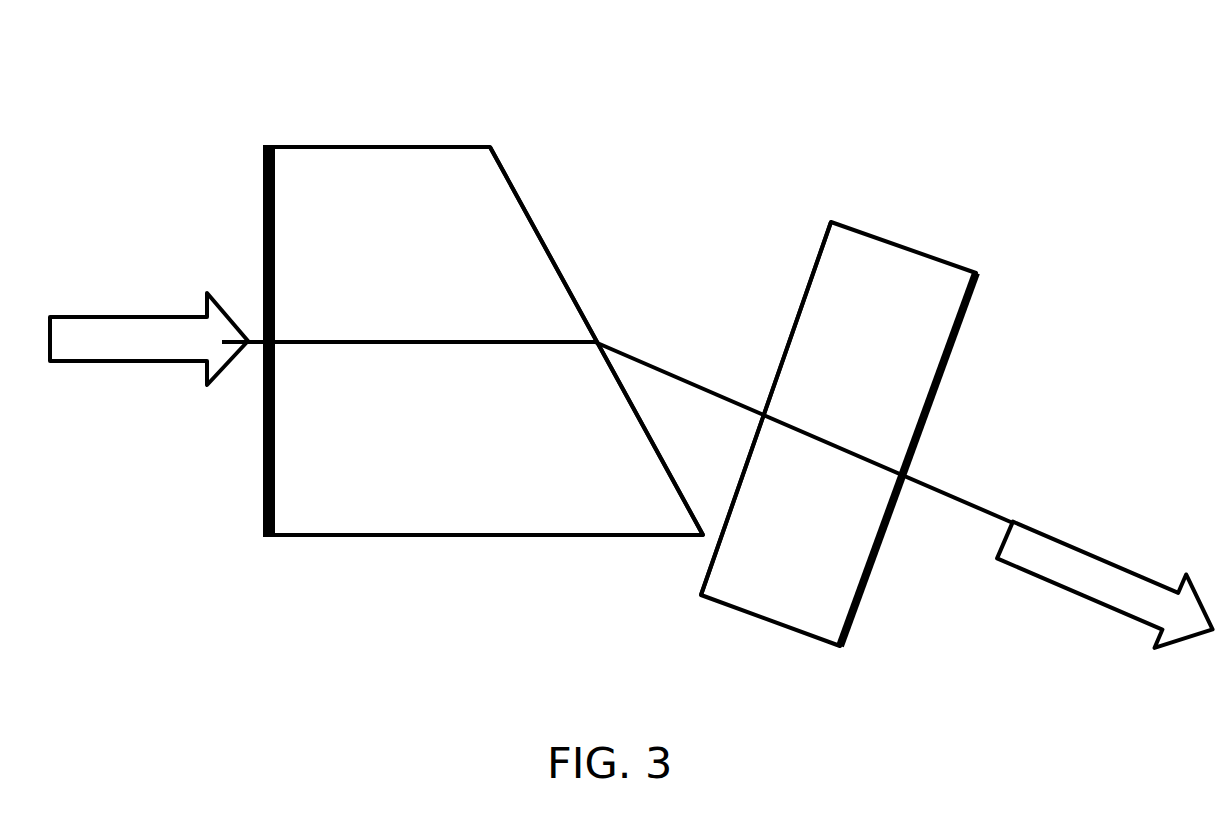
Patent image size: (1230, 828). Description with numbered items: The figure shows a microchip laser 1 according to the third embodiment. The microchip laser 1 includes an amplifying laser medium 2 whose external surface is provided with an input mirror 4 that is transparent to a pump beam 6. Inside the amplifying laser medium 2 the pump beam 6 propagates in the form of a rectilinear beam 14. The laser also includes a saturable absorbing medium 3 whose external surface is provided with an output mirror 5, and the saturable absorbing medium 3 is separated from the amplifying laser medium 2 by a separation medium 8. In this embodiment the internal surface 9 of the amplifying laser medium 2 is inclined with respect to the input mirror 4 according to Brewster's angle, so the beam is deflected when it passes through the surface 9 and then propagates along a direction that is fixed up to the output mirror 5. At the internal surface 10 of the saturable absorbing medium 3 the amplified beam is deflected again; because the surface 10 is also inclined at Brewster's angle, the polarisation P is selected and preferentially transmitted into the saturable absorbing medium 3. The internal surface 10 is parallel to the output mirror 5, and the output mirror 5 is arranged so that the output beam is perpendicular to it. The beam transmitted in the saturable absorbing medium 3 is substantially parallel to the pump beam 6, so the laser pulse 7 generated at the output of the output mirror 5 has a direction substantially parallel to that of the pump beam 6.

The microchip laser 1 is at (170, 666).
The amplifying laser medium 2 is at (450, 510).
The saturable absorbing medium 3 is at (872, 286).
The input mirror 4 is at (262, 208).
The output mirror 5 is at (955, 345).
The pump beam 6 is at (125, 340).
The laser pulse 7 is at (1088, 555).
The separation medium 8 is at (698, 456).
The internal surface of the amplifying laser medium 9 is at (533, 222).
The internal surface of the saturable absorbing medium 10 is at (815, 266).
The rectilinear beam 14 is at (325, 338).